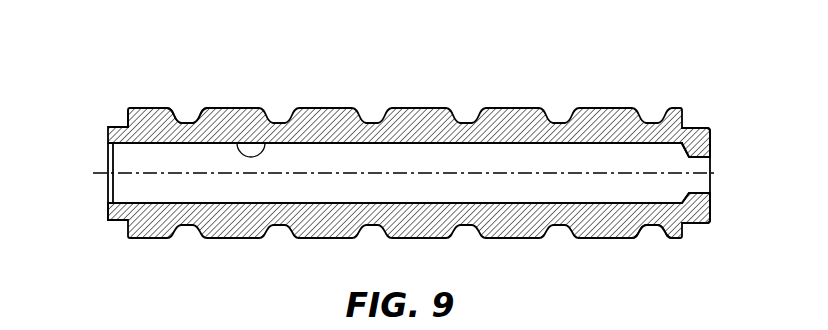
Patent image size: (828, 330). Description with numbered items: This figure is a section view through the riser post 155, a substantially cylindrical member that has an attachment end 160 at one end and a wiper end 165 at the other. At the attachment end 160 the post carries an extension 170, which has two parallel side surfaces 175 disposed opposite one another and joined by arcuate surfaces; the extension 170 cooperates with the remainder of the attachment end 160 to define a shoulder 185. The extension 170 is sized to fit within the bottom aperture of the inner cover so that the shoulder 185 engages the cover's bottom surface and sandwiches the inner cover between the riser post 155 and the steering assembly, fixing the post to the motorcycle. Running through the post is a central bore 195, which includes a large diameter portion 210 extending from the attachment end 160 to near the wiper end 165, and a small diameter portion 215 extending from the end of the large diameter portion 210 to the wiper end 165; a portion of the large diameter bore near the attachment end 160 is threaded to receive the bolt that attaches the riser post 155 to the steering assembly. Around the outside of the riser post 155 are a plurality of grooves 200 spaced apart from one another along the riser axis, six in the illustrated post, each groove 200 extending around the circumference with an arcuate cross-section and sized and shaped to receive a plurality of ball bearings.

The riser post 155 is at (510, 68).
The attachment end 160 is at (150, 107).
The wiper end 165 is at (700, 127).
The extension 170 is at (112, 223).
The side surfaces 175 is at (112, 126).
The shoulder 185 is at (125, 121).
The central bore 195 is at (140, 187).
The grooves 200 is at (372, 121).
The large diameter portion 210 is at (237, 143).
The small diameter portion 215 is at (703, 195).